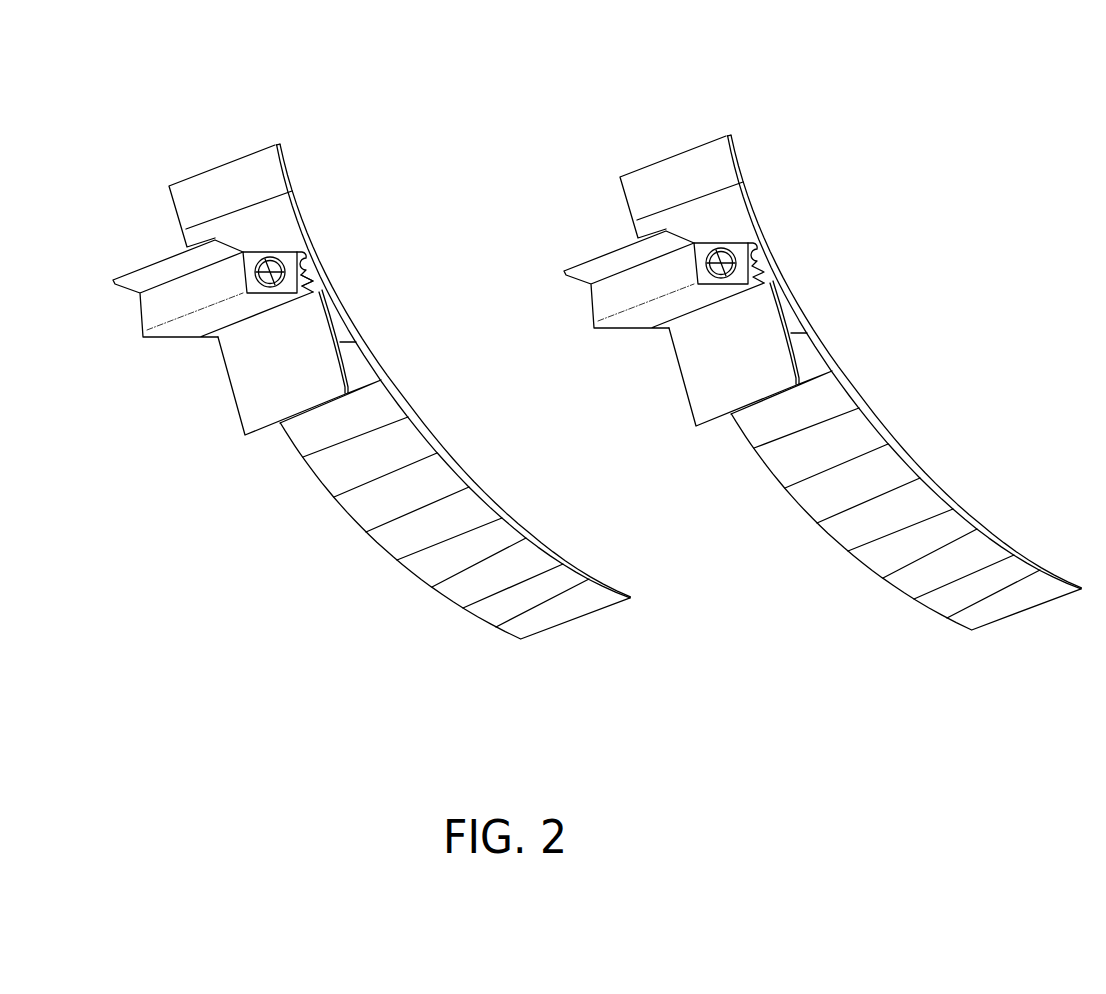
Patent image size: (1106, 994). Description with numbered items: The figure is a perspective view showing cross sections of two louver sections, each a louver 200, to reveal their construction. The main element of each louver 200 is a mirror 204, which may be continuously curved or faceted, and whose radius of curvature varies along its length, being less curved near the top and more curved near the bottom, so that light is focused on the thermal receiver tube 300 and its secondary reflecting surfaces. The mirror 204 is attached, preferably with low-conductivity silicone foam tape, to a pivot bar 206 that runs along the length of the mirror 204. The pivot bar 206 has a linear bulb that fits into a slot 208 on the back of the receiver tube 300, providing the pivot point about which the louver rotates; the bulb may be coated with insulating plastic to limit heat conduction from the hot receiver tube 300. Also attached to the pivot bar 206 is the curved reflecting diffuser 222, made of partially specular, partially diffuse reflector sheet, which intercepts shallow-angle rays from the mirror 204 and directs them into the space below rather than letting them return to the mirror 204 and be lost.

The louver 200 is at (300, 125).
The mirror 204 is at (523, 535).
The pivot bar 206 is at (310, 263).
The slot 208 is at (315, 276).
The reflecting diffuser 222 is at (250, 403).
The thermal receiver tube 300 is at (153, 315).